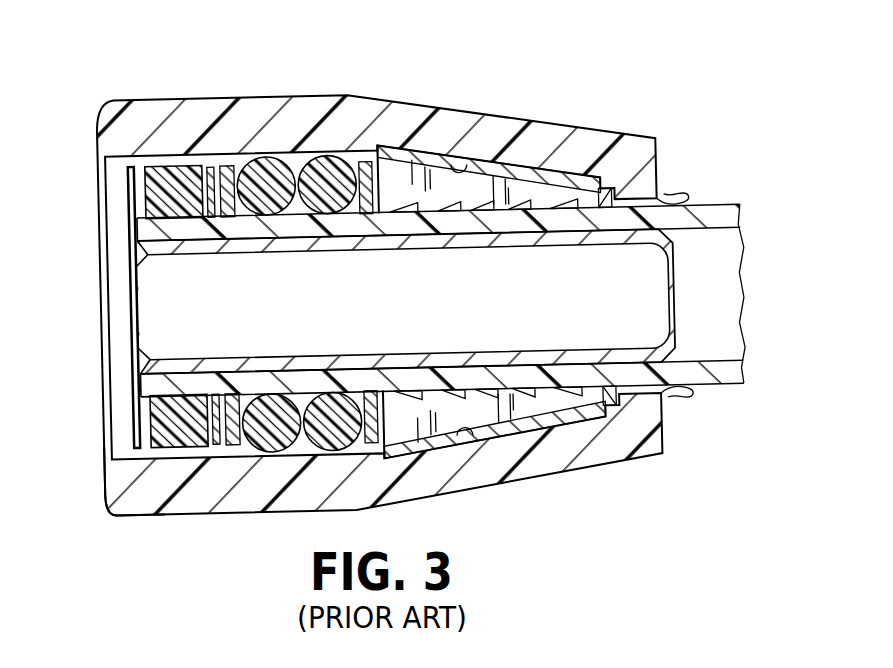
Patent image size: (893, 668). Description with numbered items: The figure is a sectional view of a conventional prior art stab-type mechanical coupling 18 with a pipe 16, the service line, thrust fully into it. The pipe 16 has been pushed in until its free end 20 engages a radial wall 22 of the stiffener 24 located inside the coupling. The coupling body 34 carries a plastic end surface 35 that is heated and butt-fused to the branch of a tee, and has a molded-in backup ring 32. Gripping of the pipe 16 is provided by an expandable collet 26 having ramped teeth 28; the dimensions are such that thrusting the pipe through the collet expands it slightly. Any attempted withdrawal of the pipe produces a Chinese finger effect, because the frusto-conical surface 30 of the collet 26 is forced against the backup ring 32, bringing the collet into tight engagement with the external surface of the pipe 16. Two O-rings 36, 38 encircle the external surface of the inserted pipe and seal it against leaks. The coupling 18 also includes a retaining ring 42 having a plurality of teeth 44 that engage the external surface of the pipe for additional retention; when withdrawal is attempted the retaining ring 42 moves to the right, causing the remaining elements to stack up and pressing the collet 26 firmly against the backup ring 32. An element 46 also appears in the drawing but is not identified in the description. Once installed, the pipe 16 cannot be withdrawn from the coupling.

The pipe 16 is at (753, 219).
The mechanical coupling 18 is at (320, 62).
The free end 20 is at (142, 219).
The radial wall 22 is at (131, 399).
The stiffener 24 is at (150, 295).
The collet 26 is at (451, 203).
The ramped teeth 28 is at (494, 215).
The frusto-conical surface 30 is at (460, 192).
The backup ring 32 is at (533, 168).
The coupling body 34 is at (606, 135).
The end surface 35 is at (99, 493).
The O-ring 36 is at (274, 194).
The O-ring 38 is at (345, 221).
The retaining ring 42 is at (219, 446).
The teeth 44 is at (143, 181).
The washer 46 is at (230, 160).